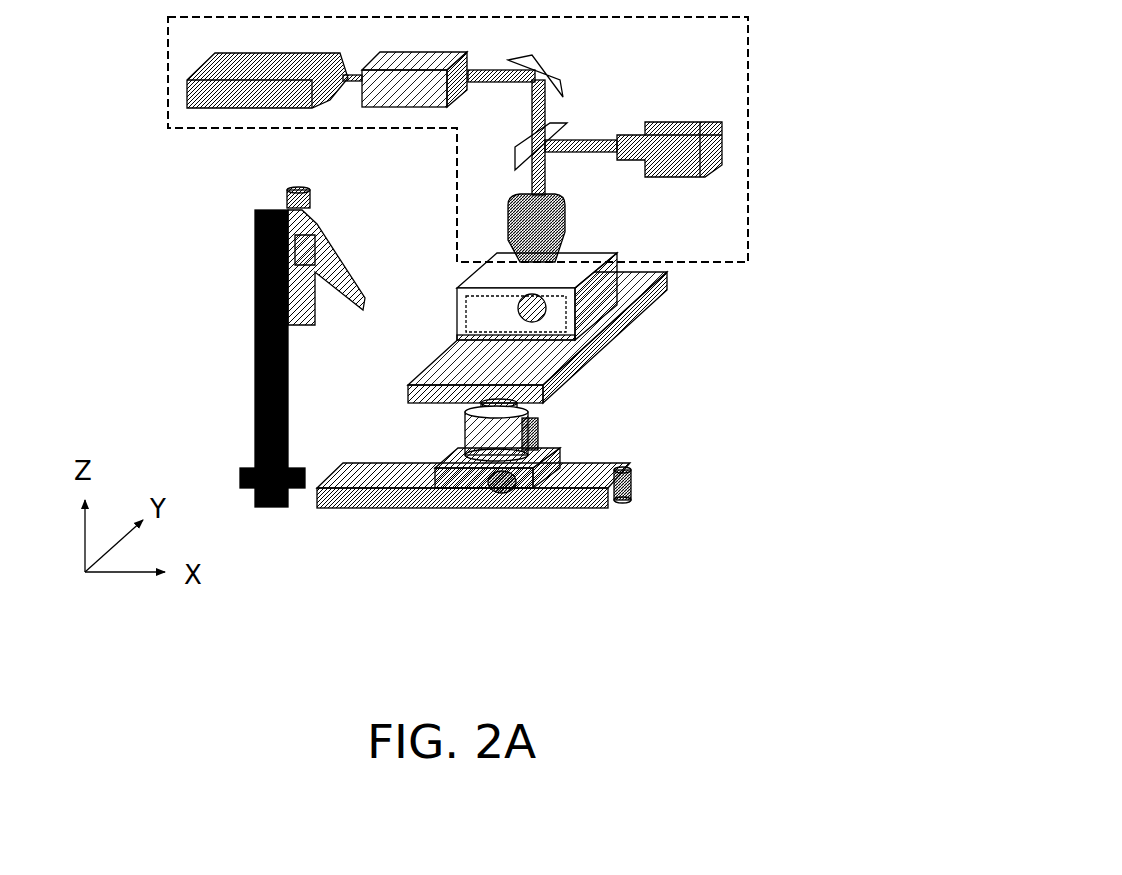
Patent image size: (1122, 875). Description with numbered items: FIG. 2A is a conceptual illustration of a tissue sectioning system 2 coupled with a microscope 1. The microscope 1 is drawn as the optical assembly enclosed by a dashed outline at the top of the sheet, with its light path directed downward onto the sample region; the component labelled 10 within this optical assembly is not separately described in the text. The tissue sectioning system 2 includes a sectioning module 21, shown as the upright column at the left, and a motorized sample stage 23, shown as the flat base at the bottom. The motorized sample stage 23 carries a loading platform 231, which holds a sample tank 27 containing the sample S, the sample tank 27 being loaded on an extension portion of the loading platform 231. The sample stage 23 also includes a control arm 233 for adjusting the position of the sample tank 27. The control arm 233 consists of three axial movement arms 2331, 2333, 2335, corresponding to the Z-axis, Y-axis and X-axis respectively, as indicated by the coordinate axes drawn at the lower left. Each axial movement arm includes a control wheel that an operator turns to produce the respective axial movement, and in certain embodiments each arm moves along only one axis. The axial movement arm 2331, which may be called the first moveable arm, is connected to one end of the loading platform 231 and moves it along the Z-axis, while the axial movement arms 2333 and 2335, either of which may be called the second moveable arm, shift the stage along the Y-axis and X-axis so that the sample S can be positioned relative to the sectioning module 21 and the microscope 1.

The microscope 1 is at (752, 76).
The tissue sectioning system 2 is at (333, 552).
The objective lens 10 is at (560, 220).
The sectioning module 21 is at (254, 375).
The motorized sample stage 23 is at (449, 512).
The sample tank 27 is at (605, 298).
The loading platform 231 is at (570, 363).
The control arm 233 is at (800, 402).
The axial movement arm 2331 is at (497, 437).
The axial movement arm 2333 is at (593, 478).
The axial movement arm 2335 is at (522, 484).
The sample S is at (522, 312).